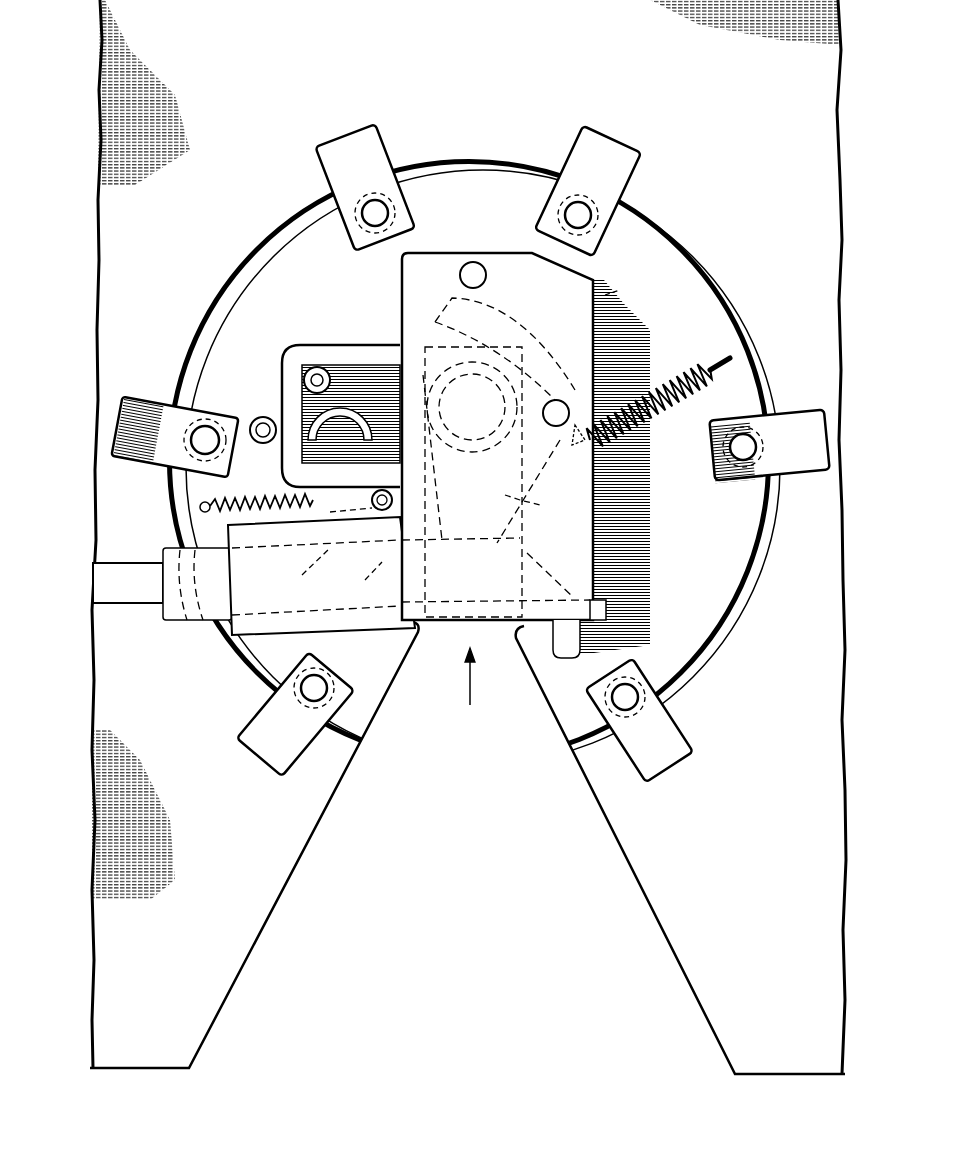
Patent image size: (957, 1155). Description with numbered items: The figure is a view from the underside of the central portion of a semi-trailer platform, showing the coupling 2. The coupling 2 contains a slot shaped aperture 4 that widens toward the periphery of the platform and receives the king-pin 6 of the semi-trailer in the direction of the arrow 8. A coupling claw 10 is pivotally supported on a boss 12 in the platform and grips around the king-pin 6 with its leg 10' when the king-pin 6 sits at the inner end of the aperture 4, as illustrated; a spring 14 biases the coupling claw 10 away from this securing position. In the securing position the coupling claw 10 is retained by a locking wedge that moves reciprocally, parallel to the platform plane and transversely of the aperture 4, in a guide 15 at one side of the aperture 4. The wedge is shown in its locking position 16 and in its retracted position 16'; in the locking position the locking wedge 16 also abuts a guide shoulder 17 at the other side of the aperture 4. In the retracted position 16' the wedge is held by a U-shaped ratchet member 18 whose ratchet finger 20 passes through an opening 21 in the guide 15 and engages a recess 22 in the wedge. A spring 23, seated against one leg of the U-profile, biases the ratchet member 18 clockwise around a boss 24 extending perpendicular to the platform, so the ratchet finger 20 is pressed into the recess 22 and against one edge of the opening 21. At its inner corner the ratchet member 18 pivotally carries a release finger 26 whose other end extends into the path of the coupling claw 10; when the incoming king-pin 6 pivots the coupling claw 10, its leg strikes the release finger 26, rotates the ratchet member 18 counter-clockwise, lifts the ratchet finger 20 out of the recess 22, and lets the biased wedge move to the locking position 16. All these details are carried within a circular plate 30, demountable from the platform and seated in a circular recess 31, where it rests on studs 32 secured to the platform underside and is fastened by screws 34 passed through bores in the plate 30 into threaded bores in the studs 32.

The coupling 2 is at (620, 832).
The slot shaped aperture 4 is at (518, 630).
The king-pin 6 is at (545, 470).
The arrow 8 is at (469, 690).
The coupling claw 10 is at (631, 297).
The leg of the coupling claw 10' is at (543, 507).
The boss 12 is at (560, 405).
The spring 14 is at (662, 415).
The guide 15 is at (375, 622).
The locking wedge 16 is at (560, 495).
The locking wedge (retracted position) 16' is at (301, 568).
The guide shoulder 17 is at (608, 606).
The ratchet member 18 is at (318, 346).
The ratchet finger 20 is at (375, 498).
The opening 21 is at (338, 506).
The recess 22 is at (356, 578).
The spring 23 is at (280, 495).
The boss 24 is at (263, 418).
The release finger 26 is at (398, 378).
The circular plate 30 is at (695, 295).
The circular recess 31 is at (485, 170).
The studs 32 is at (582, 155).
The screws 34 is at (378, 213).